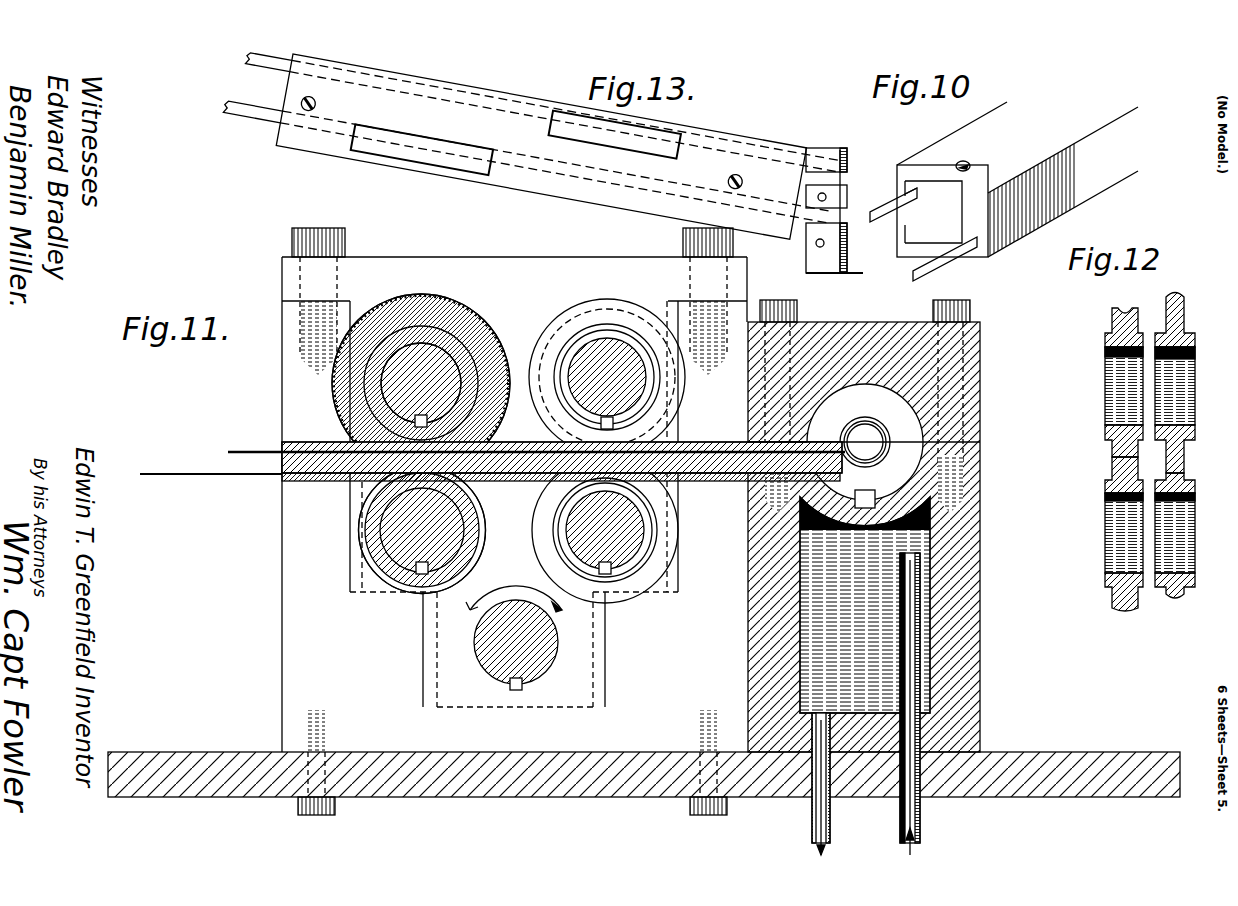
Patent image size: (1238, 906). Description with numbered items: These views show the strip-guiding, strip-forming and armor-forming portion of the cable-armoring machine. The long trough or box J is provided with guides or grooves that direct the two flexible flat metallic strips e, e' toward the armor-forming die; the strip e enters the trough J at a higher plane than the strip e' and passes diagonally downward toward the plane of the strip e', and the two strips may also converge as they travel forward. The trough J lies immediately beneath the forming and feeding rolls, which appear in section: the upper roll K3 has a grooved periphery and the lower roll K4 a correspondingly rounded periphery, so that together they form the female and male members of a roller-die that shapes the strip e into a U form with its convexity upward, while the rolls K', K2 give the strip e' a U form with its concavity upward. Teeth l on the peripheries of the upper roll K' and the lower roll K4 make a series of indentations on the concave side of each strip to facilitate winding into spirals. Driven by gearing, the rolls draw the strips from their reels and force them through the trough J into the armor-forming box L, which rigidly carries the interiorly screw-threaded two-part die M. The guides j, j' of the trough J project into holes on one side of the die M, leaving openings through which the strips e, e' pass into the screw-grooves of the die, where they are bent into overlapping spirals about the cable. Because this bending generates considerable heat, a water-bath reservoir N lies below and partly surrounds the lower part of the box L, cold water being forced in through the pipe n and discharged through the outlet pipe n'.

In FIG. 13, the trough J is at (739, 149).
In FIG. 10, the trough J is at (1017, 179).
In FIG. 11, the trough J is at (282, 462).
In FIG. 13, the upper metallic strip e is at (529, 111).
In FIG. 10, the upper metallic strip e is at (893, 206).
In FIG. 11, the upper metallic strip e is at (522, 444).
In FIG. 13, the lower metallic strip e' is at (519, 162).
In FIG. 10, the lower metallic strip e' is at (942, 259).
In FIG. 11, the lower metallic strip e' is at (476, 472).
In FIG. 13, the armor-forming die M is at (824, 150).
In FIG. 11, the armor-forming die M is at (864, 446).
In FIG. 13, the guide of the trough j is at (824, 177).
In FIG. 13, the guide of the trough j' is at (824, 246).
In FIG. 11, the guide of the trough j' is at (760, 427).
In FIG. 12, the upper forming and feeding roll K' is at (1177, 372).
In FIG. 11, the upper forming and feeding roll K' is at (421, 373).
In FIG. 12, the lower forming and feeding roll K2 is at (1164, 596).
In FIG. 11, the lower forming and feeding roll K2 is at (358, 527).
In FIG. 12, the upper forming and feeding roll K3 is at (1100, 311).
In FIG. 11, the upper forming and feeding roll K3 is at (611, 320).
In FIG. 12, the lower forming and feeding roll K4 is at (1103, 606).
In FIG. 11, the lower forming and feeding roll K4 is at (533, 510).
In FIG. 11, the teeth l is at (492, 330).
In FIG. 11, the armor-forming box L is at (970, 343).
In FIG. 11, the reservoir N is at (865, 605).
In FIG. 11, the inlet pipe n is at (918, 704).
In FIG. 11, the outlet pipe n' is at (804, 784).